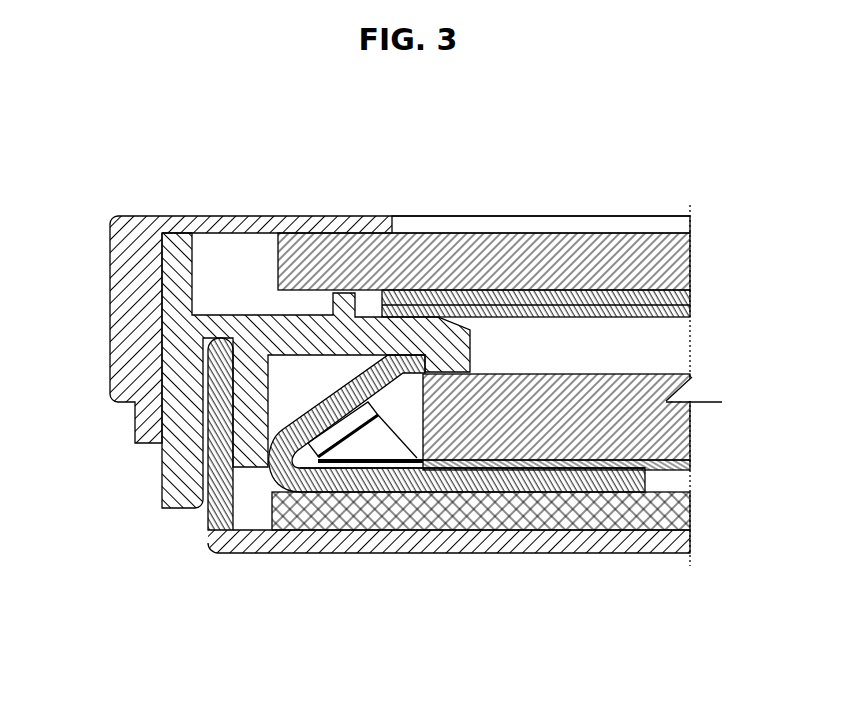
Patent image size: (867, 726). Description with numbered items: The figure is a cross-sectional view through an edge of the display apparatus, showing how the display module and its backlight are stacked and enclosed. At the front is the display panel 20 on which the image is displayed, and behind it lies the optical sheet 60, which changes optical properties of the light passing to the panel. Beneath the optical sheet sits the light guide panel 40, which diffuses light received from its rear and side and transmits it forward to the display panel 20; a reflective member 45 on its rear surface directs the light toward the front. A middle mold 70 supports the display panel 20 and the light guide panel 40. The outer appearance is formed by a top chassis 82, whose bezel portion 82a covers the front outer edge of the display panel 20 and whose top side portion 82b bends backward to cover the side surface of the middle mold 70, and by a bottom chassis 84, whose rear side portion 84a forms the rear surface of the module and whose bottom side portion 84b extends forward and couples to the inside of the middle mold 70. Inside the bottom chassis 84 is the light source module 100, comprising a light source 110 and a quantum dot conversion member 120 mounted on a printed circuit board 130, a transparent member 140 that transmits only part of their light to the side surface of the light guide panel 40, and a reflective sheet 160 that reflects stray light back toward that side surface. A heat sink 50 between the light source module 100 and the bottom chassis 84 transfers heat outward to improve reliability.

The display panel 20 is at (583, 240).
The light guide panel 40 is at (692, 377).
The reflective member 45 is at (692, 462).
The heat sink 50 is at (685, 510).
The optical sheet 60 is at (690, 295).
The middle mold 70 is at (173, 378).
The top chassis 82 is at (370, 290).
The bezel portion 82a is at (240, 216).
The top side portion 82b is at (112, 290).
The bottom chassis 84 is at (370, 481).
The rear side portion 84a is at (560, 553).
The bottom side portion 84b is at (203, 485).
The light source module 100 is at (429, 520).
The light source 110 is at (316, 458).
The quantum dot conversion member 120 is at (345, 462).
The printed circuit board 130 is at (272, 470).
The transparent member 140 is at (390, 464).
The reflective sheet 160 is at (412, 380).